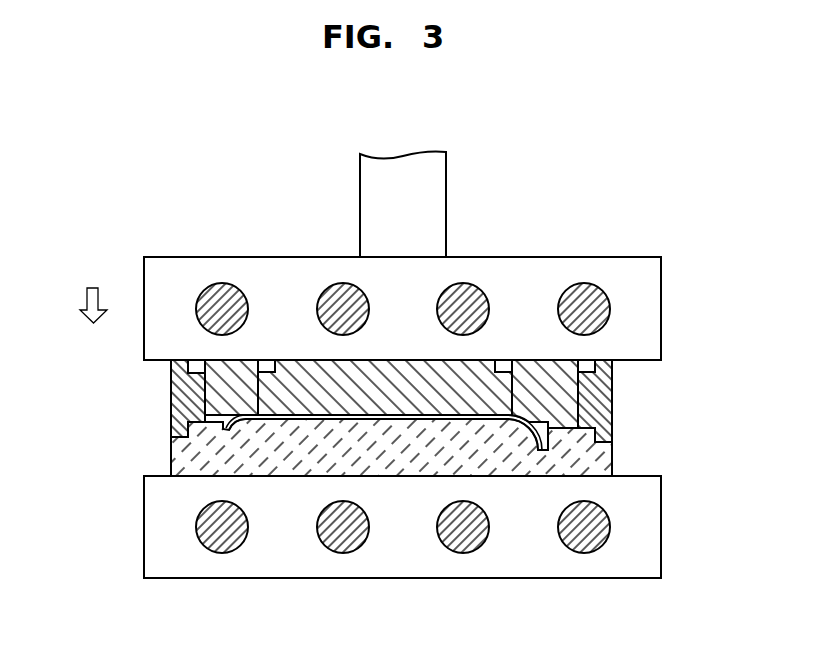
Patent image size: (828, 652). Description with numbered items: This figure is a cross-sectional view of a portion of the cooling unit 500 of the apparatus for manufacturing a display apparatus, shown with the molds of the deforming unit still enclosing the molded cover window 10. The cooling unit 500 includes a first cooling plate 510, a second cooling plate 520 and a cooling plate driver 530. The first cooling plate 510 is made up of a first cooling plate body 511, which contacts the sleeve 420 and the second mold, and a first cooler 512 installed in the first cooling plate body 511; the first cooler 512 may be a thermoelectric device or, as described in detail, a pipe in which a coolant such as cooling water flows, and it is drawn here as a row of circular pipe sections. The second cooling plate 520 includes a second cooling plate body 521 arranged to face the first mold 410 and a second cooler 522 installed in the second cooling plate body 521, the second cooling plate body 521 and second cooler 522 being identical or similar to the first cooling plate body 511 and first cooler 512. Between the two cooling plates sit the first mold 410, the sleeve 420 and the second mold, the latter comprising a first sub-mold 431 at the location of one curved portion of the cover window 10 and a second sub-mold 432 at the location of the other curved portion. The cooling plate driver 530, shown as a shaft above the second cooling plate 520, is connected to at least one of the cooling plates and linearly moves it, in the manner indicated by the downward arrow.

The cooling unit 500 is at (109, 193).
The cover window 10 is at (407, 423).
The first mold 410 is at (183, 456).
The sleeve 420 is at (481, 392).
The first sub-mold 431 is at (218, 389).
The second sub-mold 432 is at (600, 398).
The first cooling plate 510 is at (733, 497).
The first cooling plate body 511 is at (651, 505).
The first cooler 512 is at (597, 537).
The second cooling plate 520 is at (733, 278).
The second cooling plate body 521 is at (651, 286).
The second cooler 522 is at (597, 318).
The cooling plate driver 530 is at (437, 208).